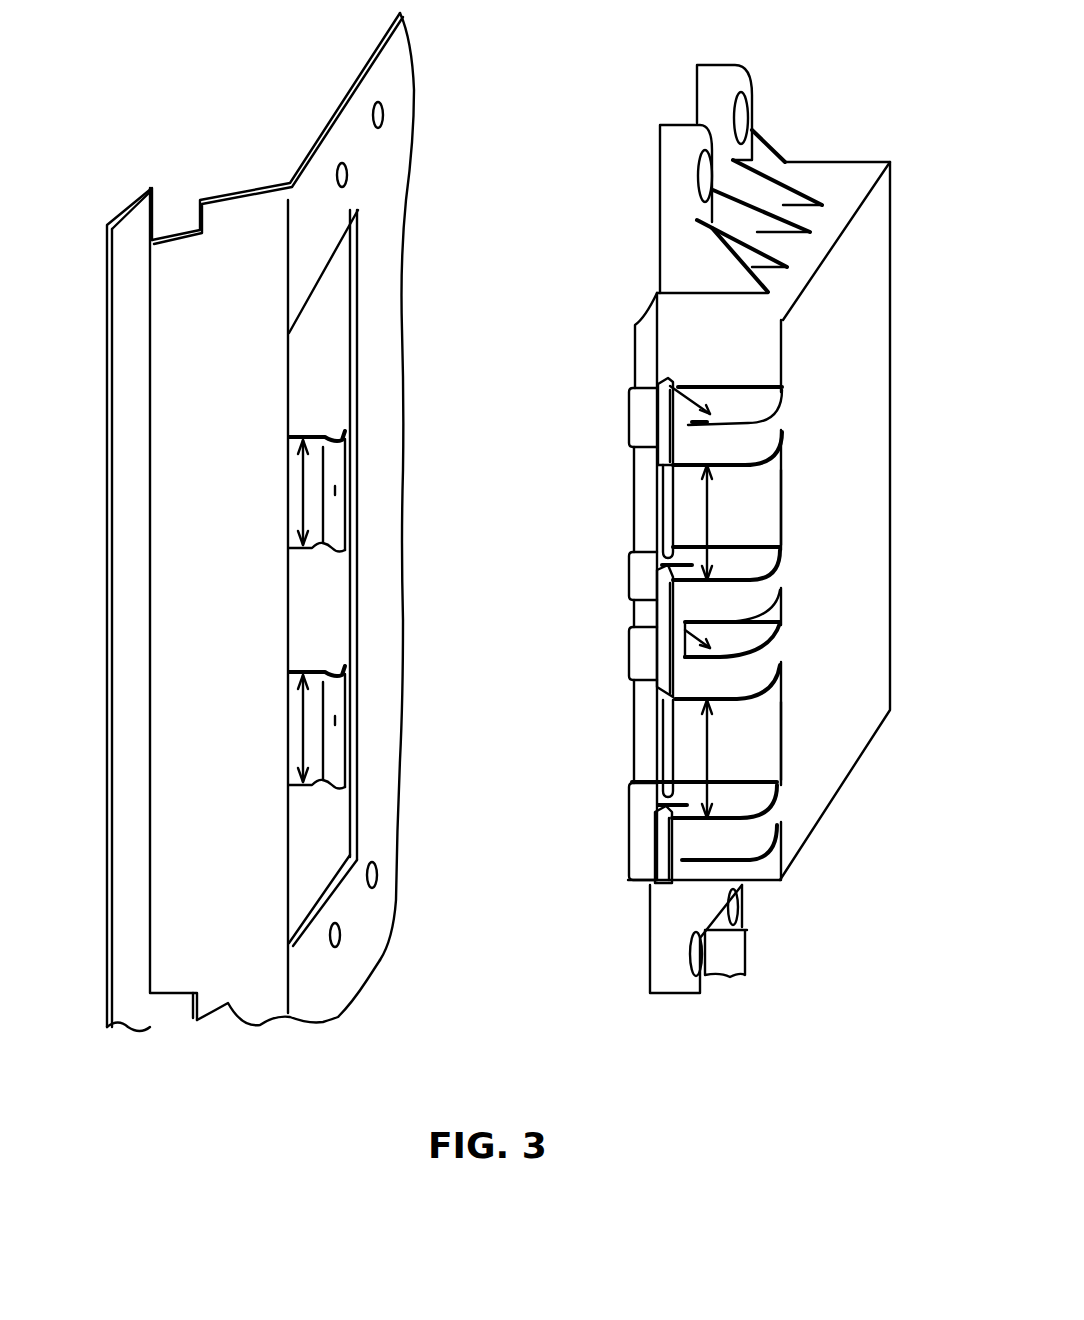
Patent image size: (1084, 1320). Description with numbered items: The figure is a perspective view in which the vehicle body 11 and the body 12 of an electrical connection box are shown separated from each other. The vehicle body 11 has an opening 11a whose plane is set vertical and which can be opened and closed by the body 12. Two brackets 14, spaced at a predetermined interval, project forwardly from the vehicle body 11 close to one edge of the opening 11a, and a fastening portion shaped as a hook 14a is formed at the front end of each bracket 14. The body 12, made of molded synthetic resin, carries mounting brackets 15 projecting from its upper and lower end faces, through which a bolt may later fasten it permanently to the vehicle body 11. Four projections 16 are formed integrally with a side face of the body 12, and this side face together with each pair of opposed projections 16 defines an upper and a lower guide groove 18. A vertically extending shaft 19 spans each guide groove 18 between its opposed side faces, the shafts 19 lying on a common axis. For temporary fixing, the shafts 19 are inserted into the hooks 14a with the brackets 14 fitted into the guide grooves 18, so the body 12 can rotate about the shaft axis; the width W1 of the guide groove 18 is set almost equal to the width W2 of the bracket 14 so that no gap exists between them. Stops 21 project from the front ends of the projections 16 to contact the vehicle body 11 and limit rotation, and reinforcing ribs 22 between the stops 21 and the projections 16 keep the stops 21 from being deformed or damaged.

The vehicle body 11 is at (232, 1003).
The opening 11a is at (341, 814).
The body 12 is at (880, 465).
The bracket 14 is at (308, 548).
The hook 14a is at (335, 490).
The mounting bracket 15 is at (697, 72).
The projection 16 is at (743, 442).
The guide groove 18 is at (775, 478).
The shaft 19 is at (661, 503).
The stop 21 is at (664, 420).
The reinforcing rib 22 is at (708, 412).
The width of the guide groove W1 is at (707, 519).
The width of the bracket W2 is at (303, 480).